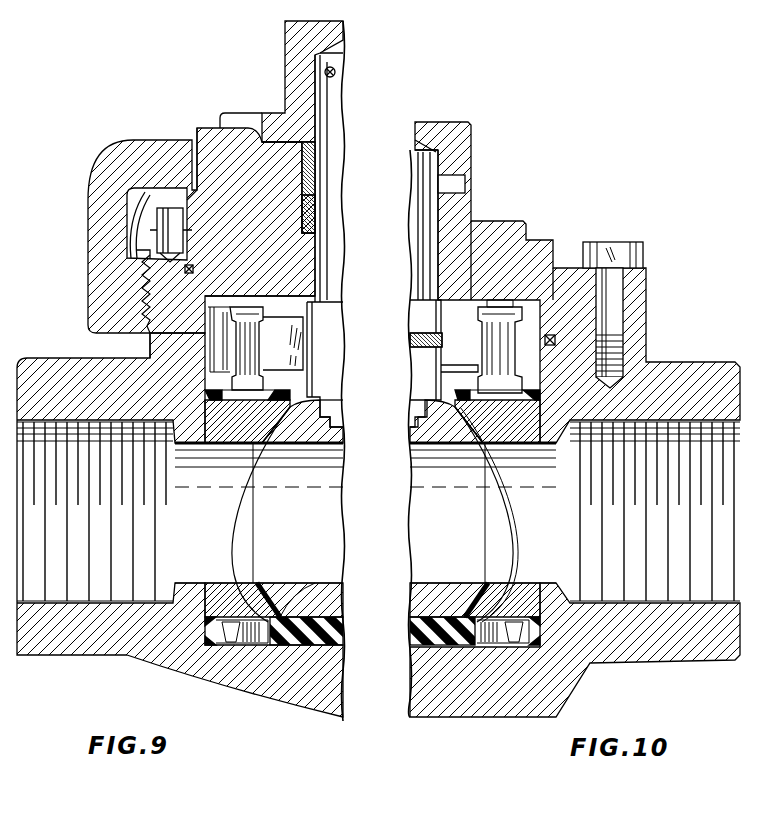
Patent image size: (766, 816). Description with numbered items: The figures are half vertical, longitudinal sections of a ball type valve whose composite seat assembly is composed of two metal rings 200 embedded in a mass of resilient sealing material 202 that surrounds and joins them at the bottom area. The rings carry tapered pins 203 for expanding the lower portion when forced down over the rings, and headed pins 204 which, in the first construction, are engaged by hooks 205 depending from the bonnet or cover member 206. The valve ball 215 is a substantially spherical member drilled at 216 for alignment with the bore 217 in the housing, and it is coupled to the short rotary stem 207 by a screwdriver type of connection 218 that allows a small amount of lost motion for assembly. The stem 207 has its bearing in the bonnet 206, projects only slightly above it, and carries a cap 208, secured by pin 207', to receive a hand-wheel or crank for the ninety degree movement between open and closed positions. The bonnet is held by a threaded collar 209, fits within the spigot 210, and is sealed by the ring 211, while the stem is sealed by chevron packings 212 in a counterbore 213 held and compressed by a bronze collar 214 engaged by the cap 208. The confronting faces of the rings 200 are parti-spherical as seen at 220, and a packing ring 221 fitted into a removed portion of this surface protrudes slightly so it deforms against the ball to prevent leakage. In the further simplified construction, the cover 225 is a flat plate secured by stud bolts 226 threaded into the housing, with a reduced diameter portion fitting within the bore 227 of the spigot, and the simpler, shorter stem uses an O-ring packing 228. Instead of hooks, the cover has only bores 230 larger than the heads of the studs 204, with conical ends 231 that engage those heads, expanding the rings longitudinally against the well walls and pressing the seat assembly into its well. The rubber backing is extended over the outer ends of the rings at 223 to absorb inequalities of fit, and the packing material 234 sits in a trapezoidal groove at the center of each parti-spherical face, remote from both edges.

In FIG. 9, the metal rings 200 is at (222, 422).
In FIG. 10, the metal rings 200 is at (540, 420).
In FIG. 9, the resilient sealing material 202 is at (207, 632).
In FIG. 10, the resilient sealing material 202 is at (436, 637).
In FIG. 9, the tapered pins 203 is at (238, 644).
In FIG. 10, the tapered pins 203 is at (503, 644).
In FIG. 9, the headed pins 204 is at (240, 348).
In FIG. 10, the headed pins 204 is at (486, 353).
In FIG. 9, the hooks 205 is at (298, 358).
In FIG. 9, the bonnet or cover member 206 is at (212, 150).
In FIG. 9, the stem 207 is at (347, 371).
In FIG. 9, the pin 207' is at (358, 76).
In FIG. 9, the cap 208 is at (290, 47).
In FIG. 9, the threaded collar 209 is at (100, 230).
In FIG. 9, the spigot 210 is at (172, 334).
In FIG. 9, the ring 211 is at (193, 274).
In FIG. 9, the chevron packings 212 is at (303, 212).
In FIG. 9, the counterbore 213 is at (303, 155).
In FIG. 9, the bronze collar 214 is at (305, 180).
In FIG. 9, the valve ball 215 is at (340, 445).
In FIG. 9, the drilled through-bore 216 is at (328, 523).
In FIG. 9, the bore 217 is at (212, 523).
In FIG. 10, the bore 217 is at (550, 530).
In FIG. 9, the screwdriver type connection 218 is at (340, 413).
In FIG. 9, the parti-spherical surface 220 is at (253, 438).
In FIG. 9, the packing ring 221 is at (262, 600).
In FIG. 10, the rubber backing extension 223 is at (530, 613).
In FIG. 10, the cover 225 is at (553, 264).
In FIG. 10, the stud bolts 226 is at (618, 301).
In FIG. 10, the bore 227 is at (548, 348).
In FIG. 10, the O-ring packing 228 is at (417, 340).
In FIG. 10, the bores 230 is at (482, 370).
In FIG. 10, the conical ends 231 is at (516, 325).
In FIG. 10, the packing material 234 is at (484, 597).